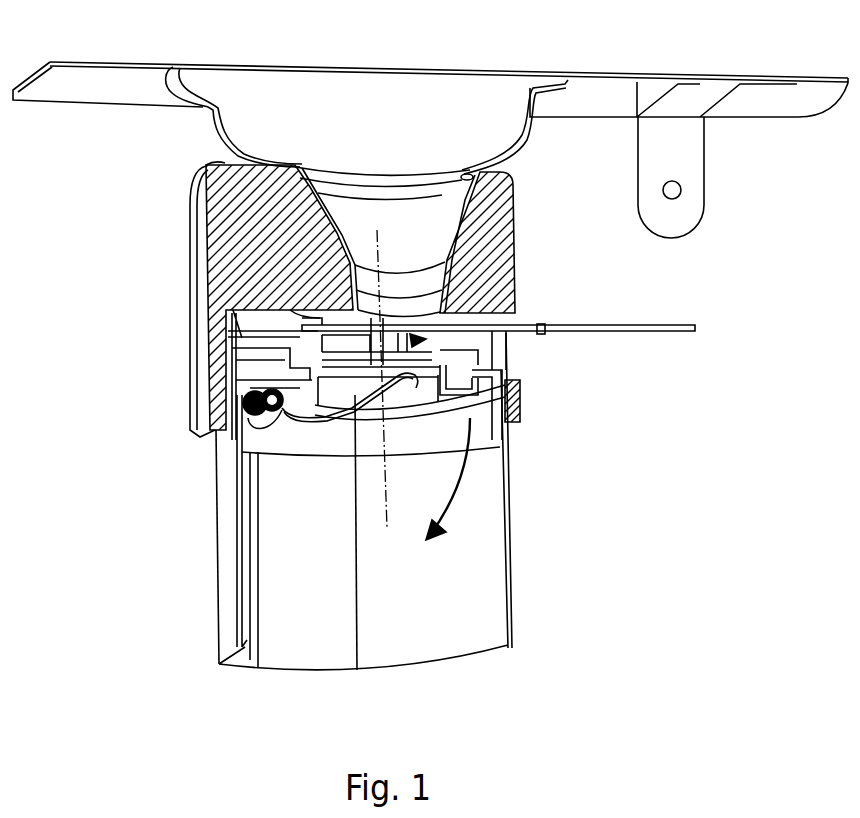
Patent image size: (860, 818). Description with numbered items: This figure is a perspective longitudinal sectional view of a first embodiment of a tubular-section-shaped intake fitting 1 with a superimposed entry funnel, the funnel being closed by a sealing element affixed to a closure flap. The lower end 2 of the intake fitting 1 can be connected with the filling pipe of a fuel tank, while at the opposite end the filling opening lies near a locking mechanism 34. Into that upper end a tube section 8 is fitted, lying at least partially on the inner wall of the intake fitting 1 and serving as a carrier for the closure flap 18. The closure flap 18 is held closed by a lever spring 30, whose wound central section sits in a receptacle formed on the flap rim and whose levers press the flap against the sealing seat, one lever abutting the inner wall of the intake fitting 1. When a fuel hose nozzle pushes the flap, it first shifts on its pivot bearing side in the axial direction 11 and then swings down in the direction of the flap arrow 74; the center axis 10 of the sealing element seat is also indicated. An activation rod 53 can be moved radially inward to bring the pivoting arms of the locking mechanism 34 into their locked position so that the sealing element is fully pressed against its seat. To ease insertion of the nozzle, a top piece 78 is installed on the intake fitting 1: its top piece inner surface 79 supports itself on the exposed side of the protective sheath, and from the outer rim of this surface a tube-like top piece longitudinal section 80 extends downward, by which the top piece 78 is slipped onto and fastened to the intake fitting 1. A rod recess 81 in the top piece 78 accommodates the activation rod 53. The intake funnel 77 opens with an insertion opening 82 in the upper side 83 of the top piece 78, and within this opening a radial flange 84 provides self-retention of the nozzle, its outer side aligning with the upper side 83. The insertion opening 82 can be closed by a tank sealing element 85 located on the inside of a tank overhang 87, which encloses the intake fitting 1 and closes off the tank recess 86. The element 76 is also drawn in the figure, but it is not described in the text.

The intake fitting 1 is at (233, 578).
The lower end 2 is at (480, 628).
The tube section 8 is at (303, 433).
The center axis 10 is at (385, 499).
The axial direction 11 is at (500, 370).
The closure flap 18 is at (408, 416).
The lever spring 30 is at (243, 398).
The locking mechanism 34 is at (460, 352).
The activation rod 53 is at (613, 331).
The flap arrow 74 is at (468, 485).
The fastening element 76 is at (541, 324).
The intake funnel 77 is at (445, 230).
The top piece 78 is at (220, 237).
The top piece inner surface 79 is at (280, 310).
The top piece longitudinal section 80 is at (200, 331).
The rod recess 81 is at (505, 343).
The insertion opening 82 is at (320, 175).
The upper side 83 is at (224, 165).
The radial flange 84 is at (467, 173).
The tank sealing element 85 is at (243, 99).
The tank recess 86 is at (717, 215).
The tank overhang 87 is at (627, 70).